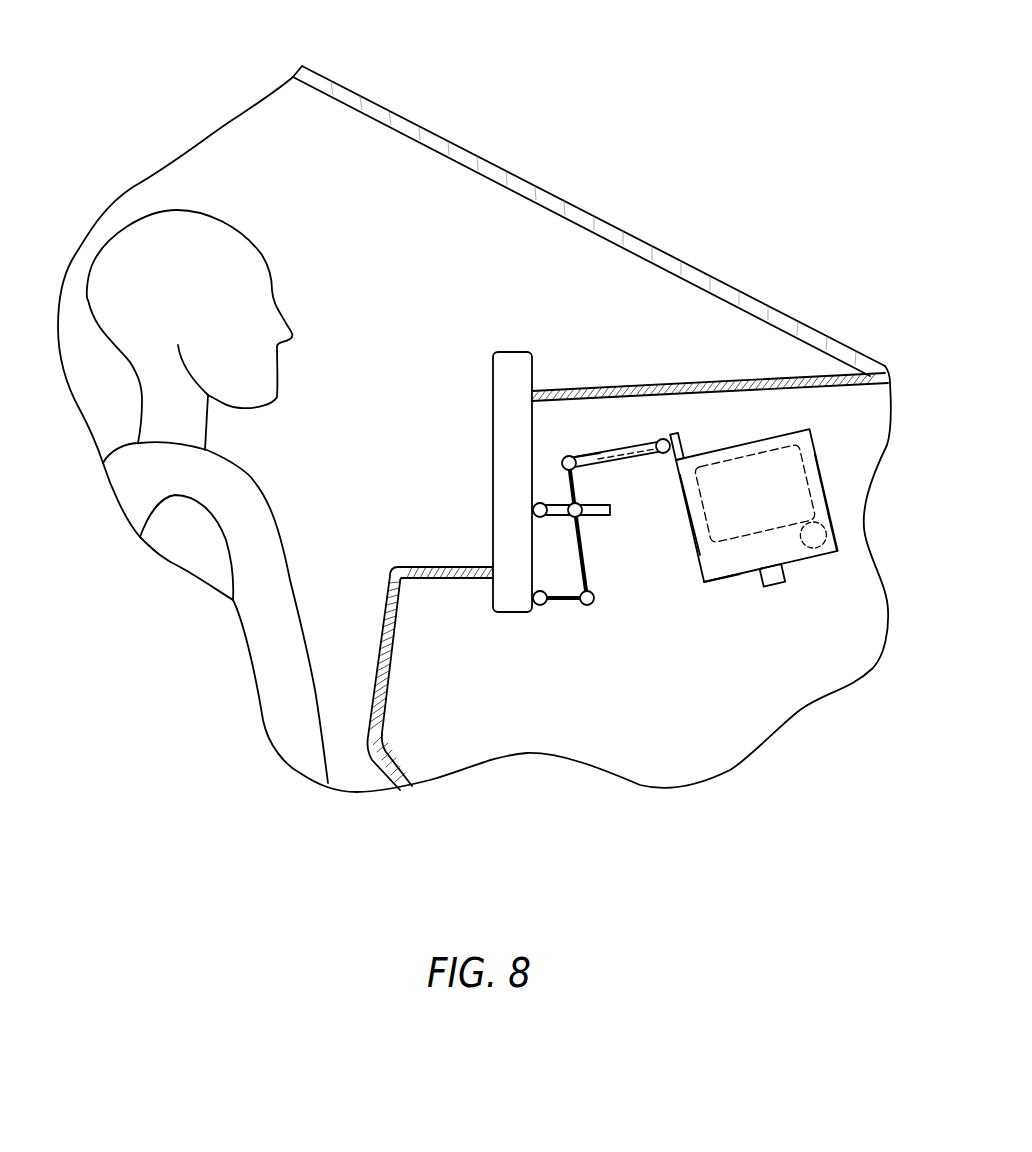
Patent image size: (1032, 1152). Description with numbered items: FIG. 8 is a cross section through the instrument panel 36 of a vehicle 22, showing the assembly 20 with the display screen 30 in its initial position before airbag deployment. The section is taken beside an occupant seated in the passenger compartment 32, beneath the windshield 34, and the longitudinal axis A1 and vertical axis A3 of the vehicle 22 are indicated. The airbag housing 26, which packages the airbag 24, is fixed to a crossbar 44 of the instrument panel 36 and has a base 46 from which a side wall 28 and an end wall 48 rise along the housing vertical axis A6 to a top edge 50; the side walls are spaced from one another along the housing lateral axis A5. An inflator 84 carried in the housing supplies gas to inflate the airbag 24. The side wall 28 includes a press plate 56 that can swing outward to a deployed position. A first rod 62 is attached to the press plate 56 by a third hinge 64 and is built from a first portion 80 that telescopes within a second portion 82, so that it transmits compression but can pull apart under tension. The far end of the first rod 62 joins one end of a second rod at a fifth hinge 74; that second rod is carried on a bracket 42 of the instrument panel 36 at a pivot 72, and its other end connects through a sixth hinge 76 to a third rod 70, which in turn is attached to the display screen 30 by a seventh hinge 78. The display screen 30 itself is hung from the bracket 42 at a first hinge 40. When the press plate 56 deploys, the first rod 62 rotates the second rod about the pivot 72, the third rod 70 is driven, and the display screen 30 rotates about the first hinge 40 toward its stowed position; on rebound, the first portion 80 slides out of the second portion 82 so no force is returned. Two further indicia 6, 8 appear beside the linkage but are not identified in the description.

The assembly 20 is at (820, 640).
The vehicle 22 is at (462, 103).
The airbag 24 is at (751, 447).
The airbag housing 26 is at (829, 517).
The side wall 28 is at (686, 505).
The display screen 30 is at (490, 425).
The passenger compartment 32 is at (408, 225).
The windshield 34 is at (602, 213).
The instrument panel 36 is at (430, 567).
The first hinge 40 is at (535, 512).
The bracket 42 is at (560, 520).
The crossbar 44 is at (757, 578).
The base 46 is at (832, 548).
The end wall 48 is at (718, 563).
The top edge 50 is at (725, 455).
The press plate 56 is at (680, 452).
The first rod 62 is at (618, 450).
The third hinge 64 is at (660, 440).
The third rod 70 is at (565, 607).
The pivot 72 is at (580, 505).
The fifth hinge 74 is at (567, 458).
The sixth hinge 76 is at (587, 607).
The seventh hinge 78 is at (540, 607).
The first portion 80 is at (633, 463).
The second portion 82 is at (583, 455).
The inflator 84 is at (826, 535).
The upper vertical link 6 is at (593, 556).
The lower vertical link 8 is at (610, 554).
The longitudinal axis A1 is at (650, 877).
The vertical axis A3 is at (32, 390).
The housing lateral axis A5 is at (847, 607).
The housing vertical axis A6 is at (833, 425).